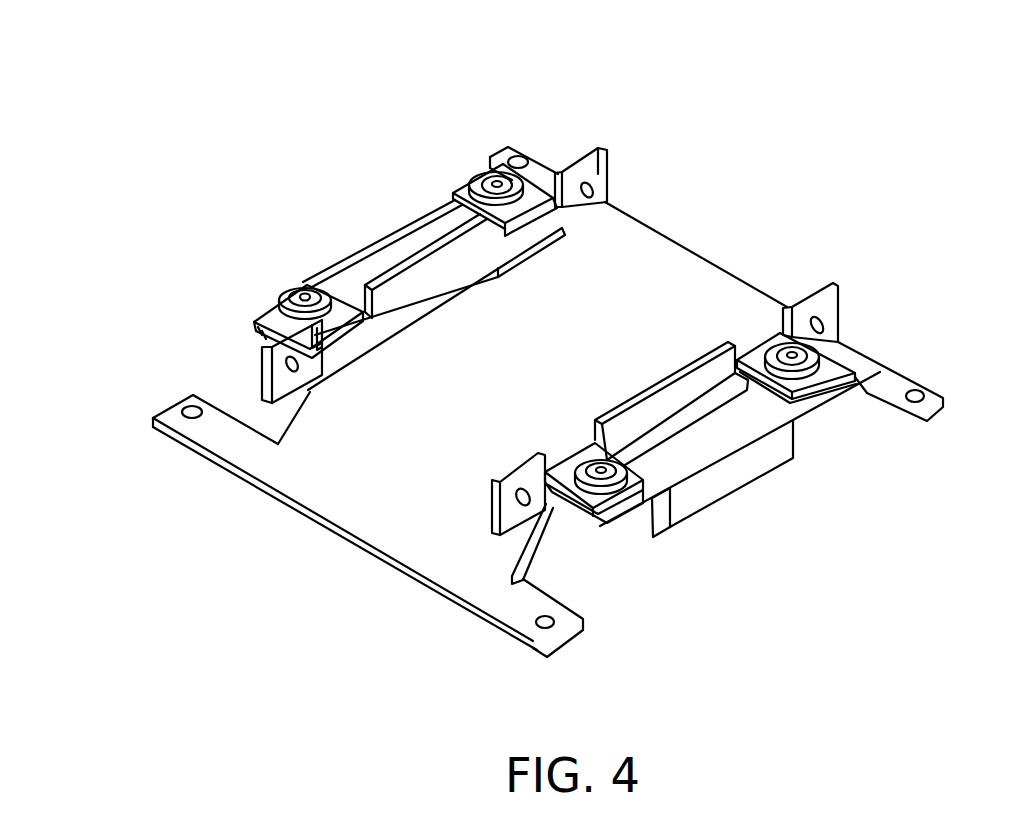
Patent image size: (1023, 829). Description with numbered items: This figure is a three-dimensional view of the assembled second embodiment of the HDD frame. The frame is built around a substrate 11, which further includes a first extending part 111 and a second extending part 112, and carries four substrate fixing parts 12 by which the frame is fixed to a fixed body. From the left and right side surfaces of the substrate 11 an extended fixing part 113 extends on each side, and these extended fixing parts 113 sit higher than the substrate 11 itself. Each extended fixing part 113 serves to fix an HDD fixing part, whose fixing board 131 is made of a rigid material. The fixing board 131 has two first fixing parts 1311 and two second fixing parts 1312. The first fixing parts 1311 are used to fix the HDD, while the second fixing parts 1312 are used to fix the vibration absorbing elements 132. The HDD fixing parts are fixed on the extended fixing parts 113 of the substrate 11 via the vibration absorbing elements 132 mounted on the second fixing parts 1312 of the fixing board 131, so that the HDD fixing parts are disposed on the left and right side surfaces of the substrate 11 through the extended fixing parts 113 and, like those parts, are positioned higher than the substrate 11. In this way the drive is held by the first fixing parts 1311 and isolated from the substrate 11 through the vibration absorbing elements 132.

The substrate 11 is at (516, 393).
The first extending part 111 is at (398, 480).
The second extending part 112 is at (705, 278).
The extended fixing part 113 is at (767, 448).
The substrate fixing part 12 is at (223, 428).
The fixing board 131 is at (643, 418).
The first fixing part 1311 is at (257, 315).
The second fixing part 1312 is at (336, 325).
The vibration absorbing element 132 is at (292, 303).